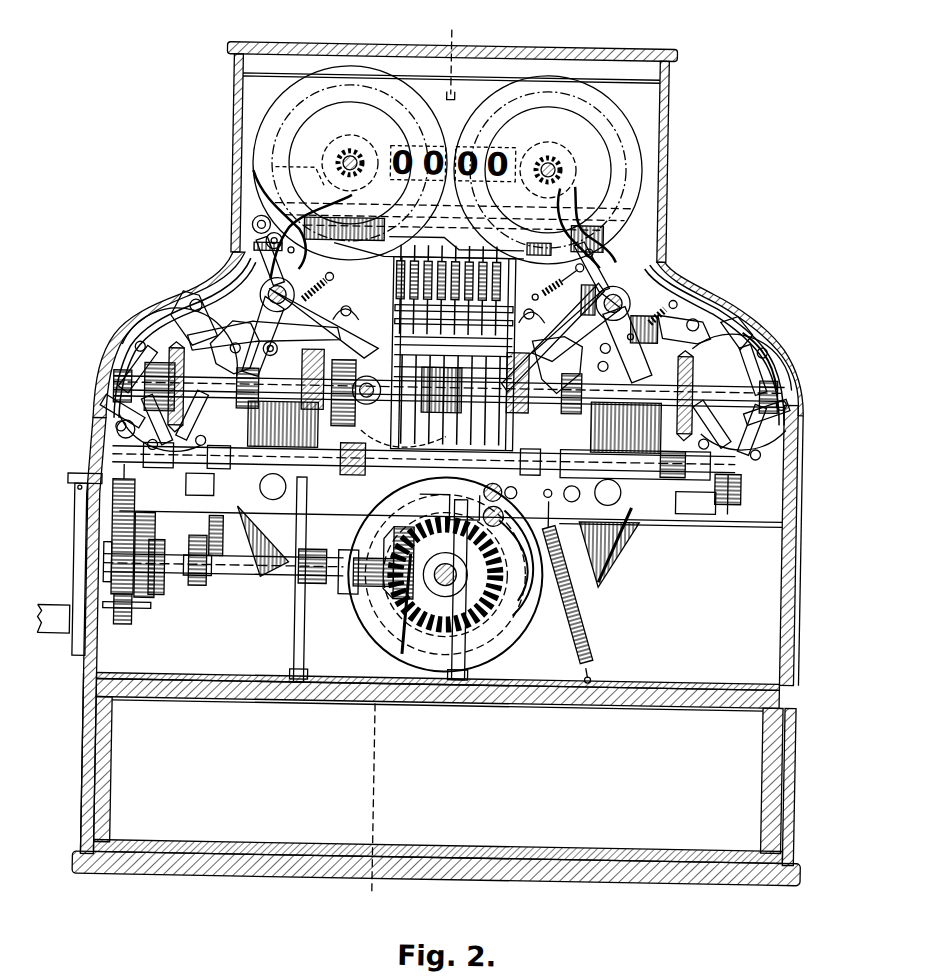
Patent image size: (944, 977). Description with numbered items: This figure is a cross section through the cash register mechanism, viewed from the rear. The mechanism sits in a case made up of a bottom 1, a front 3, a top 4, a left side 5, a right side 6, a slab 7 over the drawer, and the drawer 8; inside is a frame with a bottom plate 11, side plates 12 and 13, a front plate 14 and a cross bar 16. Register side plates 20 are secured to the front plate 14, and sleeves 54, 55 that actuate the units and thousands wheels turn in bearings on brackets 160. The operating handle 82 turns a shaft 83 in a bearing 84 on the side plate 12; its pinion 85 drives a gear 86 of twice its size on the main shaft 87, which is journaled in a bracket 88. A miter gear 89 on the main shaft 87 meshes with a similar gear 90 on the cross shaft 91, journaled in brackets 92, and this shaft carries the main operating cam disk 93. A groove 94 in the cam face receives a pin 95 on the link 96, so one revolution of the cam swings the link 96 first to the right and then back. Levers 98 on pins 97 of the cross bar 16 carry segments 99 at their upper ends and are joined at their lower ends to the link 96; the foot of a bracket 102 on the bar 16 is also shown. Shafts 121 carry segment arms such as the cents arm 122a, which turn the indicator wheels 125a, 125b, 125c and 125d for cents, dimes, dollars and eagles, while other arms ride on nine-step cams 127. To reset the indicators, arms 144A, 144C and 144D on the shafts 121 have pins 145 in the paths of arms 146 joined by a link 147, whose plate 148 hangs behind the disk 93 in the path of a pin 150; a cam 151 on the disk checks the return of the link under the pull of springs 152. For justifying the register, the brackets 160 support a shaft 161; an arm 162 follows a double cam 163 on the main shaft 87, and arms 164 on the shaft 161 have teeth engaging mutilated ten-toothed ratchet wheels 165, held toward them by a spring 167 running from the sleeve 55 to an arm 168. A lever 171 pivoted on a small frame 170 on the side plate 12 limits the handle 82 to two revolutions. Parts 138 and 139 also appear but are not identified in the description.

The bottom 1 is at (577, 874).
The front 3 is at (412, 464).
The top 4 is at (606, 50).
The left side 5 is at (746, 320).
The right side 6 is at (150, 304).
The slab 7 is at (648, 698).
The drawer 8 is at (501, 845).
The bottom plate 11 is at (250, 682).
The side plate 12 is at (100, 668).
The side plate 13 is at (782, 644).
The front plate 14 is at (662, 250).
The cross bar 16 is at (451, 504).
The side plates 20 is at (390, 272).
The sleeve 54 is at (104, 358).
The sleeve 55 is at (792, 352).
The operating handle 82 is at (78, 655).
The shaft 83 is at (72, 498).
The bearing 84 is at (123, 527).
The pinion 85 is at (157, 535).
The gear 86 is at (128, 628).
The main shaft 87 is at (176, 576).
The bracket 88 is at (297, 628).
The miter gear 89 is at (390, 612).
The miter gear 90 is at (490, 604).
The cross shaft 91 is at (444, 595).
The brackets 92 is at (460, 650).
The main operating cam disk 93 is at (520, 640).
The groove 94 is at (372, 606).
The pin 95 is at (540, 618).
The link 96 is at (280, 582).
The pins 97 is at (440, 489).
The levers 98 is at (437, 547).
The segments 99 is at (455, 424).
The bracket 102 is at (446, 493).
The shafts 121 is at (688, 268).
The segment arm 122a is at (416, 191).
The indicator wheel 125a is at (262, 153).
The indicator wheel 125b is at (262, 173).
The indicator wheel 125c is at (636, 155).
The indicator wheel 125d is at (624, 142).
The nine-step cam 127 is at (452, 392).
The pulley 138 is at (531, 499).
The link 139 is at (618, 530).
The arm 144A is at (186, 300).
The arm 144C is at (592, 339).
The arm 144D is at (742, 322).
The pins 145 is at (257, 360).
The arms 146 is at (722, 292).
The link 147 is at (397, 407).
The plate 148 is at (449, 499).
The pin 150 is at (508, 548).
The cam 151 is at (505, 572).
The springs 152 is at (490, 316).
The brackets 160 is at (118, 437).
The shaft 161 is at (424, 475).
The arm 162 is at (214, 523).
The double cam 163 is at (205, 592).
The arms 164 is at (110, 400).
The ratchet wheel 165 is at (148, 320).
The spring 167 is at (744, 488).
The arm 168 is at (728, 512).
The small frame 170 is at (124, 616).
The lever 171 is at (176, 585).